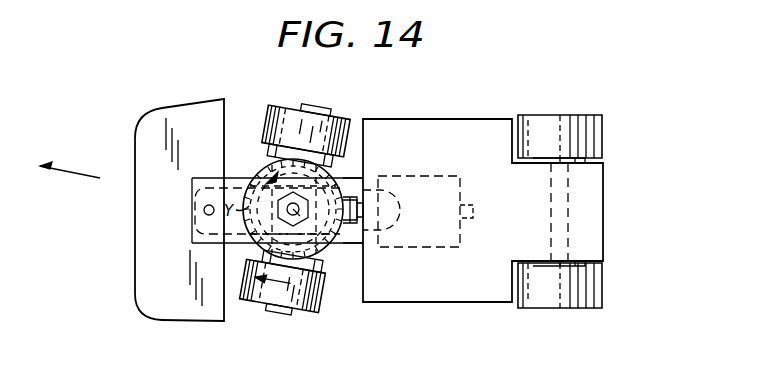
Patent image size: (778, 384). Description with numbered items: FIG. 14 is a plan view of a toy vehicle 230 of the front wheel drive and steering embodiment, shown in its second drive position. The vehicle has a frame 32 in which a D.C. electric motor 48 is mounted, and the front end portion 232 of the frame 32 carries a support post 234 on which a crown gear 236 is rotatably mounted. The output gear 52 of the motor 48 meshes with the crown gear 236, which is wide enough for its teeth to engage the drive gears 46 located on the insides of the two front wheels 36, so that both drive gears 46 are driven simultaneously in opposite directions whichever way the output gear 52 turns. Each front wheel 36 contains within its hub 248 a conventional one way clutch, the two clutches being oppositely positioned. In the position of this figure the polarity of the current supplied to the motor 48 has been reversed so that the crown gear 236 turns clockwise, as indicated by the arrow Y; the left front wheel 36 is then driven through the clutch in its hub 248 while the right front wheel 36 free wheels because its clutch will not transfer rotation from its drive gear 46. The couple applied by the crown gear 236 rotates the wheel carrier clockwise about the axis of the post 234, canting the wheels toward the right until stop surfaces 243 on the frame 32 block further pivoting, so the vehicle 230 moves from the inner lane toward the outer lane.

The frame 32 is at (498, 100).
The front wheel 36 is at (277, 114).
The drive gear 46 is at (282, 157).
The D.C. electric motor 48 is at (462, 200).
The output gear 52 is at (352, 224).
The toy vehicle 230 is at (632, 193).
The front end portion 232 is at (237, 247).
The support post 234 is at (320, 247).
The crown gear 236 is at (342, 184).
The stop surfaces 243 is at (379, 176).
The hub 248 is at (315, 108).